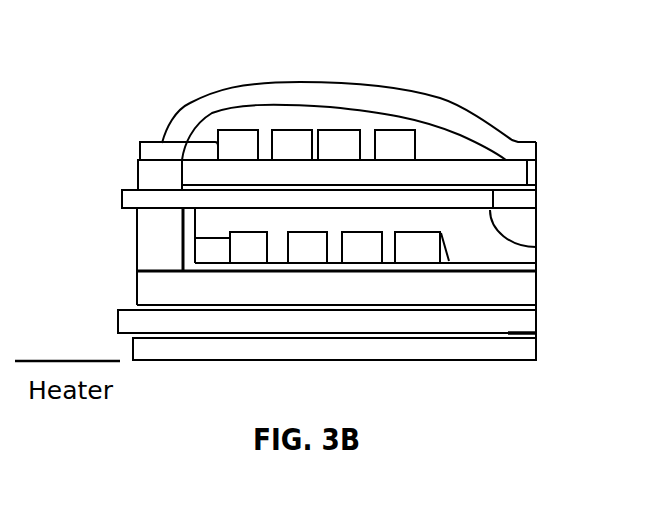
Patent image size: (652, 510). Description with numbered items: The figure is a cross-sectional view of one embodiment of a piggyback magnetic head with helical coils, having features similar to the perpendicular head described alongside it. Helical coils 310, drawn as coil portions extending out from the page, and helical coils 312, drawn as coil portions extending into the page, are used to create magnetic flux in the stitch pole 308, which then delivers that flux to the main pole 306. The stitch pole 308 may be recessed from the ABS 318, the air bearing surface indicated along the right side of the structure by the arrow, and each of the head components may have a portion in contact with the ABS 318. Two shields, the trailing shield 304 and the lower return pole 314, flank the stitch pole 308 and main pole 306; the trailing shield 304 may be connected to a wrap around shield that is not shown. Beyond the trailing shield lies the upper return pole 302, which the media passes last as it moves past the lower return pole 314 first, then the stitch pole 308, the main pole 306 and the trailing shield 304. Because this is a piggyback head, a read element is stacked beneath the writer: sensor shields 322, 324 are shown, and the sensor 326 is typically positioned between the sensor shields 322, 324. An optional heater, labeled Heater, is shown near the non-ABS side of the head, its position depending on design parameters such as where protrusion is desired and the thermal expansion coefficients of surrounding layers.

The upper return pole 302 is at (473, 113).
The trailing shield 304 is at (537, 173).
The main pole 306 is at (537, 192).
The stitch pole 308 is at (537, 245).
The helical coils 310 is at (152, 142).
The helical coils 312 is at (235, 228).
The lower return pole 314 is at (374, 296).
The ABS 318 is at (537, 277).
The sensor shield 322 is at (118, 322).
The sensor shield 324 is at (133, 348).
The sensor 326 is at (526, 333).